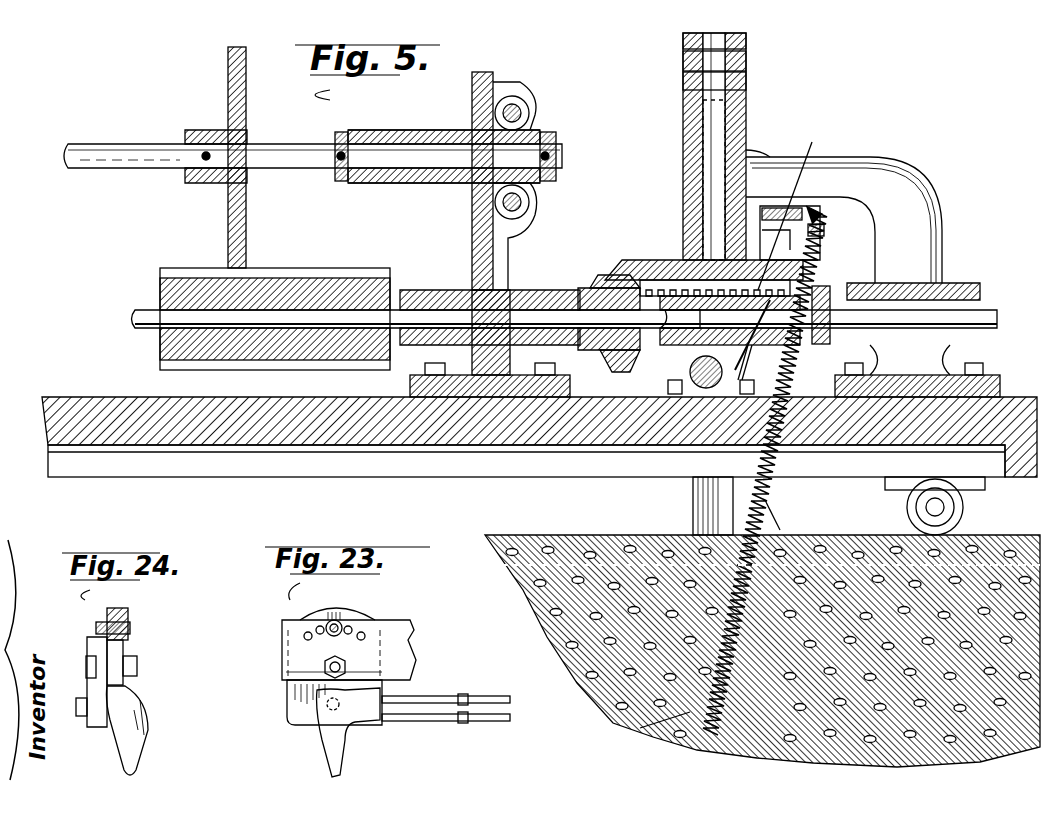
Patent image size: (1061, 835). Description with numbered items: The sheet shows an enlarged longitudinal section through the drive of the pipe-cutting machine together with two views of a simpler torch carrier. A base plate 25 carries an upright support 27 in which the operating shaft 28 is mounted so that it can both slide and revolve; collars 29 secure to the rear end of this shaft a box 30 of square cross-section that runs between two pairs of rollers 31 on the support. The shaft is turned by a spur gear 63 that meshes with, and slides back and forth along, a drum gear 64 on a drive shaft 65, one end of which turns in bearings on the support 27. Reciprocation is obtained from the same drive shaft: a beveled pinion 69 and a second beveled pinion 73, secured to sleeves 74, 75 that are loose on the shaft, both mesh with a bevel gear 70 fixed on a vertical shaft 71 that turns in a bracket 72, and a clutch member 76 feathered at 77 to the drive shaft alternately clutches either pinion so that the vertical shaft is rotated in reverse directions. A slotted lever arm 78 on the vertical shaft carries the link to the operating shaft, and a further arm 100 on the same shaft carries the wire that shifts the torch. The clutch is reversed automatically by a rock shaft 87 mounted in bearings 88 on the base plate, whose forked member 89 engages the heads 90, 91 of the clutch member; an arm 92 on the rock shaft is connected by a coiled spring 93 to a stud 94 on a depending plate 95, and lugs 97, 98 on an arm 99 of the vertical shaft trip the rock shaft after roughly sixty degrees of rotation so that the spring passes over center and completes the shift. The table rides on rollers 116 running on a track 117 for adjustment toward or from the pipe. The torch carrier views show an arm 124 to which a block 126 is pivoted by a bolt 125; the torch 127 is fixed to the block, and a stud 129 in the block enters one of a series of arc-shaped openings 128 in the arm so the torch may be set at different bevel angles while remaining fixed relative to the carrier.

In FIG. 5, the base plate 25 is at (42, 418).
In FIG. 5, the upright support 27 is at (472, 242).
In FIG. 5, the operating shaft 28 is at (283, 144).
In FIG. 5, the collar 29 is at (340, 132).
In FIG. 5, the box 30 is at (404, 183).
In FIG. 5, the roller 31 is at (522, 103).
In FIG. 5, the spur gear 63 is at (246, 228).
In FIG. 5, the drum gear 64 is at (300, 268).
In FIG. 5, the drive shaft 65 is at (447, 310).
In FIG. 5, the beveled pinion 69 is at (612, 288).
In FIG. 5, the bevel gear 70 is at (635, 260).
In FIG. 5, the vertical shaft 71 is at (683, 185).
In FIG. 5, the bracket 72 is at (765, 157).
In FIG. 5, the beveled pinion 73 is at (840, 360).
In FIG. 5, the sleeve 74 is at (612, 365).
In FIG. 5, the sleeve 75 is at (825, 286).
In FIG. 5, the clutch member 76 is at (672, 345).
In FIG. 5, the feather 77 is at (668, 280).
In FIG. 5, the lever arm 78 is at (746, 38).
In FIG. 5, the rock shaft 87 is at (752, 344).
In FIG. 5, the bearing 88 is at (690, 372).
In FIG. 5, the forked member 89 is at (761, 359).
In FIG. 5, the head 90 is at (683, 240).
In FIG. 5, the head 91 is at (800, 204).
In FIG. 5, the arm 92 is at (822, 218).
In FIG. 5, the coiled spring 93 is at (789, 508).
In FIG. 5, the stud 94 is at (700, 740).
In FIG. 5, the depending plate 95 is at (655, 732).
In FIG. 5, the lug 97 is at (762, 627).
In FIG. 5, the lug 98 is at (822, 234).
In FIG. 5, the arm 99 is at (800, 206).
In FIG. 5, the arm 100 is at (746, 95).
In FIG. 5, the roller 116 is at (902, 495).
In FIG. 5, the track 117 is at (652, 535).
In FIG. 23, the arm 124 is at (414, 648).
In FIG. 24, the arm 124 is at (123, 648).
In FIG. 23, the bolt 125 is at (326, 670).
In FIG. 24, the bolt 125 is at (137, 668).
In FIG. 23, the block 126 is at (287, 712).
In FIG. 24, the block 126 is at (95, 727).
In FIG. 23, the torch 127 is at (348, 740).
In FIG. 24, the torch 127 is at (140, 746).
In FIG. 23, the opening 128 is at (300, 630).
In FIG. 24, the opening 128 is at (128, 614).
In FIG. 23, the stud 129 is at (342, 622).
In FIG. 24, the stud 129 is at (130, 630).